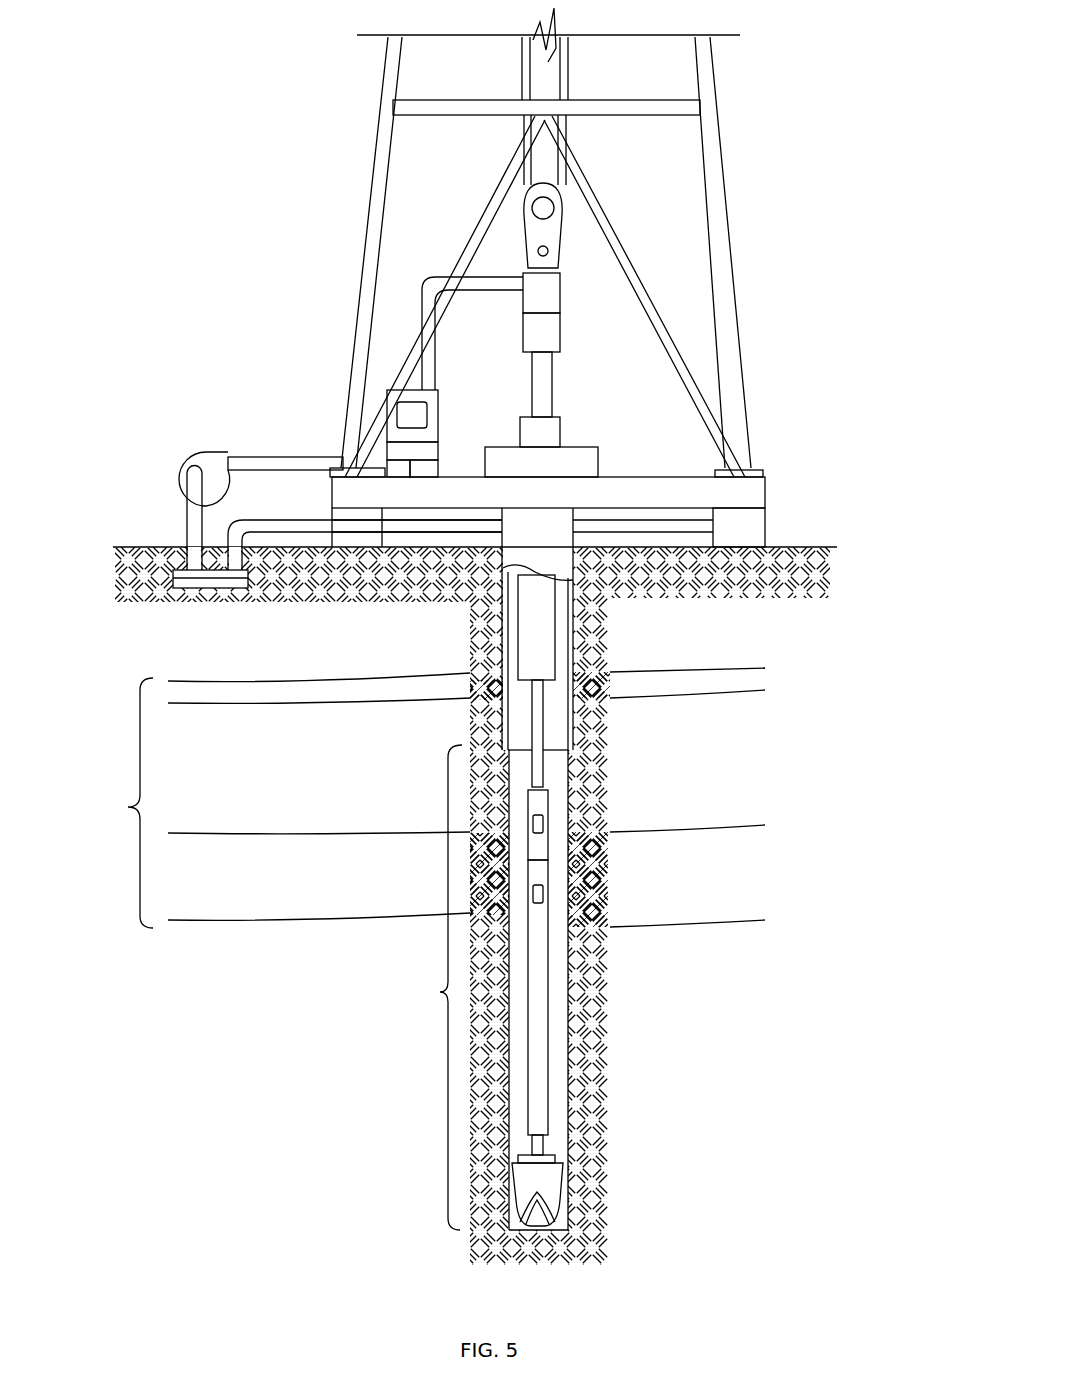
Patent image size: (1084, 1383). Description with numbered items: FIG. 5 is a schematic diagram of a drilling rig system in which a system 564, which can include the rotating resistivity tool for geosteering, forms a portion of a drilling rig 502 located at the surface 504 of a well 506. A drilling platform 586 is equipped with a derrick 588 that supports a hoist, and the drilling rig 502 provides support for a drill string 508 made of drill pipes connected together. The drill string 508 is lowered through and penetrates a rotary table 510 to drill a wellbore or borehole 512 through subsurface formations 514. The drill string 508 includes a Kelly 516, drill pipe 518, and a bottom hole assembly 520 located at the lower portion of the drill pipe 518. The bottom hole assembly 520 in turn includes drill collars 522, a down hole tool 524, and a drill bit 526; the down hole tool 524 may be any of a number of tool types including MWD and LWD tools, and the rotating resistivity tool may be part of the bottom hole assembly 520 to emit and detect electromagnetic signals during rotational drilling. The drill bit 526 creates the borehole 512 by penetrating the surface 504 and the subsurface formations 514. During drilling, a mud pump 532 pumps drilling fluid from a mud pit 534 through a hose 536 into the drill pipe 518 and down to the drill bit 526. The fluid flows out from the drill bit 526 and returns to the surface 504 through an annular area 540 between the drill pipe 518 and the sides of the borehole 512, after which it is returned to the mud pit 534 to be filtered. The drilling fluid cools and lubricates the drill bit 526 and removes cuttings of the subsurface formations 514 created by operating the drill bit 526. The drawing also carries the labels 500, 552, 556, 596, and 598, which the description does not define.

The drilling system 500 is at (442, 375).
The drilling rig 502 is at (739, 270).
The surface 504 is at (820, 547).
The well 506 is at (580, 542).
The drill string 508 is at (554, 969).
The rotary table 510 is at (598, 463).
The borehole 512 is at (560, 1055).
The subsurface formations 514 is at (419, 798).
The Kelly 516 is at (553, 377).
The drill pipe 518 is at (540, 722).
The bottom hole assembly 520 is at (423, 987).
The drill collars 522 is at (555, 637).
The down hole tool 524 is at (538, 1098).
The drill bit 526 is at (547, 1180).
The mud pump 532 is at (200, 452).
The mud pit 534 is at (195, 582).
The hose 536 is at (310, 455).
The annular area 540 is at (562, 797).
The sensor 552 is at (385, 398).
The control unit 556 is at (479, 340).
The system 564 is at (286, 176).
The drilling platform 586 is at (768, 482).
The derrick 588 is at (720, 140).
The controller 596 is at (427, 413).
The kelly bushing 598 is at (560, 430).